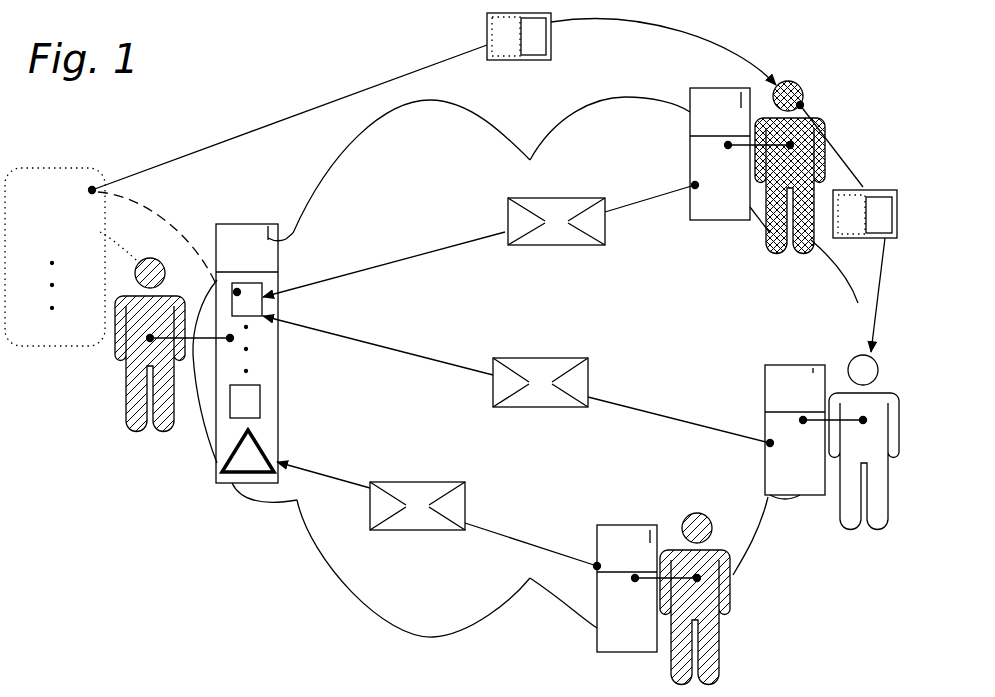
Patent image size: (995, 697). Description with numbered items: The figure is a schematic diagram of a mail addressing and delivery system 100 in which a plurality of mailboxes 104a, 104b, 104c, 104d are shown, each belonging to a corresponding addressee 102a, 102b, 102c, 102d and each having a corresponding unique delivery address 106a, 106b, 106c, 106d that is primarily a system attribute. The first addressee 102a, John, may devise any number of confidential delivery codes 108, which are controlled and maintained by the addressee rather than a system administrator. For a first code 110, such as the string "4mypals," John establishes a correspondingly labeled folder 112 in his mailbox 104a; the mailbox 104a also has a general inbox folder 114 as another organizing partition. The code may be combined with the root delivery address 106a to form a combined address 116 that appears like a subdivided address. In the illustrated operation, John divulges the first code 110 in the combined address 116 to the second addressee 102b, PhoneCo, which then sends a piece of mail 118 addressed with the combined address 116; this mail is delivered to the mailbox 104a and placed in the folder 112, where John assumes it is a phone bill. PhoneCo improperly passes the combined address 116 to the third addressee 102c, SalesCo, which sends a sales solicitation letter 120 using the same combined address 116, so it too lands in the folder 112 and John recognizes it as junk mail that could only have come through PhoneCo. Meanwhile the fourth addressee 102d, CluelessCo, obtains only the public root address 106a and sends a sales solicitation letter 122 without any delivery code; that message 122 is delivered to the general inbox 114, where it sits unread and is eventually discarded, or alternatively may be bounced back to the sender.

The mail system 100 is at (312, 546).
The addressee 102a is at (138, 393).
The addressee 102b is at (817, 118).
The addressee 102c is at (883, 522).
The addressee 102d is at (717, 652).
The mailbox 104a is at (251, 221).
The mailbox 104b is at (727, 86).
The mailbox 104c is at (805, 362).
The mailbox 104d is at (635, 522).
The delivery address 106a is at (268, 240).
The delivery address 106b is at (741, 108).
The delivery address 106c is at (813, 373).
The delivery address 106d is at (650, 543).
The delivery codes 108 is at (10, 178).
The first code 110 is at (68, 185).
The folder 112 is at (262, 293).
The general inbox folder 114 is at (226, 468).
The combined address 116 is at (487, 22).
The piece of mail 118 is at (565, 246).
The sales solicitation letter 120 is at (553, 408).
The sales solicitation letter 122 is at (437, 530).